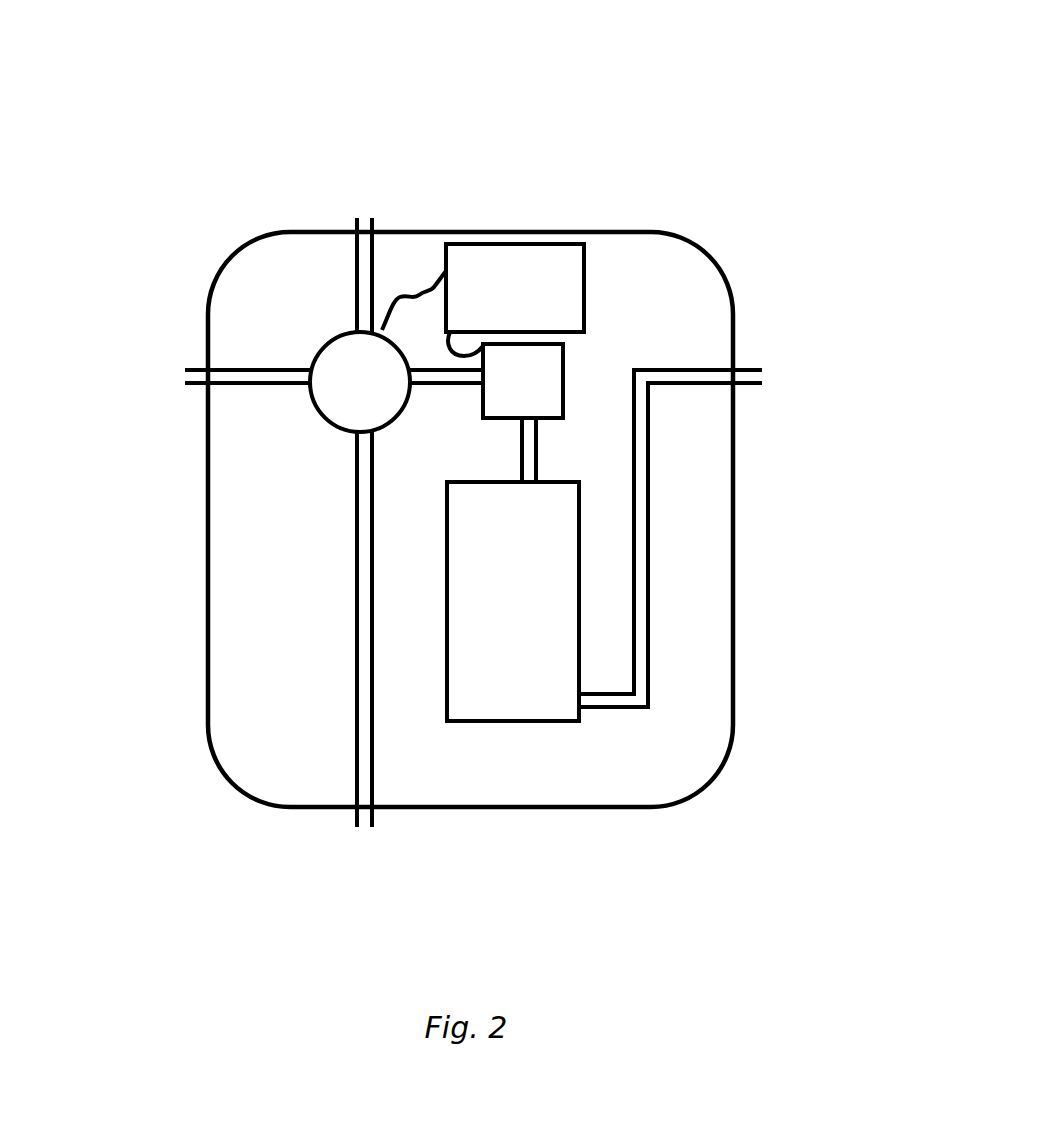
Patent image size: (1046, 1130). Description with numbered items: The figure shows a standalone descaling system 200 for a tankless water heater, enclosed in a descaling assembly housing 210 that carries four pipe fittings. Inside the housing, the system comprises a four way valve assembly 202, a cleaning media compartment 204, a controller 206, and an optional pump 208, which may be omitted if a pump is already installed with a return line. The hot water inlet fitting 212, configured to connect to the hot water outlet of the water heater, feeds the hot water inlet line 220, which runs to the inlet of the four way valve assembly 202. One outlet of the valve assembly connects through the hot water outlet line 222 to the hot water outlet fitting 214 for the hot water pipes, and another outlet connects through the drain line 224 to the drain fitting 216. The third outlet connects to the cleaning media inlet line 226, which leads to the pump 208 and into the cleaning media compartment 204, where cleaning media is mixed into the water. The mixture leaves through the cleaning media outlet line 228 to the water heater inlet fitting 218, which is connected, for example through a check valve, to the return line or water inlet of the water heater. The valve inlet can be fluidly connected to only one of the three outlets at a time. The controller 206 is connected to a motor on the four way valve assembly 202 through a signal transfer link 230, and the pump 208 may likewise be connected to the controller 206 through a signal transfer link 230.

The standalone descaling system 200 is at (575, 78).
The four way valve assembly 202 is at (323, 418).
The cleaning media compartment 204 is at (516, 722).
The controller 206 is at (568, 265).
The pump 208 is at (568, 347).
The descaling assembly housing 210 is at (738, 575).
The hot water inlet fitting 212 is at (353, 218).
The hot water outlet fitting 214 is at (183, 382).
The drain fitting 216 is at (357, 808).
The water heater inlet fitting 218 is at (738, 368).
The hot water inlet line 220 is at (350, 296).
The hot water outlet line 222 is at (232, 383).
The drain line 224 is at (357, 595).
The cleaning media inlet line 226 is at (450, 383).
The cleaning media outlet line 228 is at (648, 665).
The signal transfer link 230 is at (470, 352).